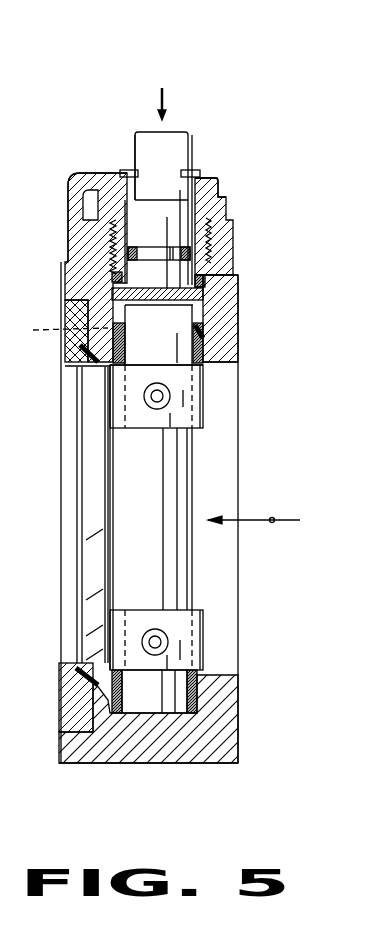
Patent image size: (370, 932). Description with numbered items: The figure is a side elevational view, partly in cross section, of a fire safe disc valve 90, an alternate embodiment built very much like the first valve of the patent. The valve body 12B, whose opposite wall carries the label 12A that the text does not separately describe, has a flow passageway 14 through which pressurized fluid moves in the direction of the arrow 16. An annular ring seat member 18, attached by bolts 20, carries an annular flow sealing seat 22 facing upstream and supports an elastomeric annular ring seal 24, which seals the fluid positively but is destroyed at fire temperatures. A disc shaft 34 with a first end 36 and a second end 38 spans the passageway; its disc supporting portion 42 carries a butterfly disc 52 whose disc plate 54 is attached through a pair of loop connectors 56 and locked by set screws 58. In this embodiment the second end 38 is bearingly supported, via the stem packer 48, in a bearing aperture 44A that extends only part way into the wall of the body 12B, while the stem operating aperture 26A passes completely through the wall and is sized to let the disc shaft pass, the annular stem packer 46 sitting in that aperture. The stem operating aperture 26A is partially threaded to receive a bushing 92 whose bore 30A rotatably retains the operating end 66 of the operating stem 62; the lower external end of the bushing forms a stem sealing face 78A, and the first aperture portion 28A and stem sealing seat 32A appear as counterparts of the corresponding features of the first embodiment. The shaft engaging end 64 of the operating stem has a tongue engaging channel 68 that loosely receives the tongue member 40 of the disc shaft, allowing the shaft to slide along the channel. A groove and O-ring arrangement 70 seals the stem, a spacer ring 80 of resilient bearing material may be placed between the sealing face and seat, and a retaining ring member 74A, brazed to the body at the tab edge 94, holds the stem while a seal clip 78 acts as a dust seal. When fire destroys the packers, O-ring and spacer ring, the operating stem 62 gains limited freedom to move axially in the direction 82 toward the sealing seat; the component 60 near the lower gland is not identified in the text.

The fire safe disc valve 90 is at (100, 90).
The direction of axial stem displacement 82 is at (166, 115).
The operating end 66 is at (168, 140).
The operating stem 62 is at (140, 143).
The seal clip 78 is at (194, 171).
The retaining ring member 74A is at (208, 176).
The bore of bushing 30A is at (198, 202).
The bushing 92 is at (220, 202).
The valve body 12B is at (233, 228).
The tab edge 94 is at (72, 203).
The first body section 12A is at (73, 230).
The groove and O-ring arrangement 70 is at (130, 247).
The rod seal 32A is at (114, 273).
The spacer ring 80 is at (199, 277).
The stem sealing face 78A is at (206, 284).
The shaft engaging end 64 is at (240, 280).
The tongue member 40 is at (205, 293).
The tongue engaging channel 68 is at (181, 313).
The stem operating aperture 26A is at (224, 331).
The upper cylinder block 28A is at (220, 345).
The annular ring seat member 18 is at (63, 305).
The bolts 20 is at (57, 332).
The end gland 60 is at (88, 678).
The annular ring seal 24 is at (85, 356).
The annular flow sealing seat 22 is at (72, 387).
The annular stem packer 46 is at (205, 363).
The loop connectors 56 is at (204, 398).
The set screws 58 is at (151, 406).
The disc shaft 34 is at (181, 455).
The flow passageway 14 is at (243, 465).
The butterfly disc 52 is at (92, 466).
The disc plate 54 is at (92, 503).
The direction of fluid flow 16 is at (274, 518).
The disc supporting portion 42 is at (166, 560).
The stem packer 48 is at (203, 673).
The bearing aperture 44A is at (214, 691).
The first end 36 is at (167, 354).
The second end 38 is at (153, 699).